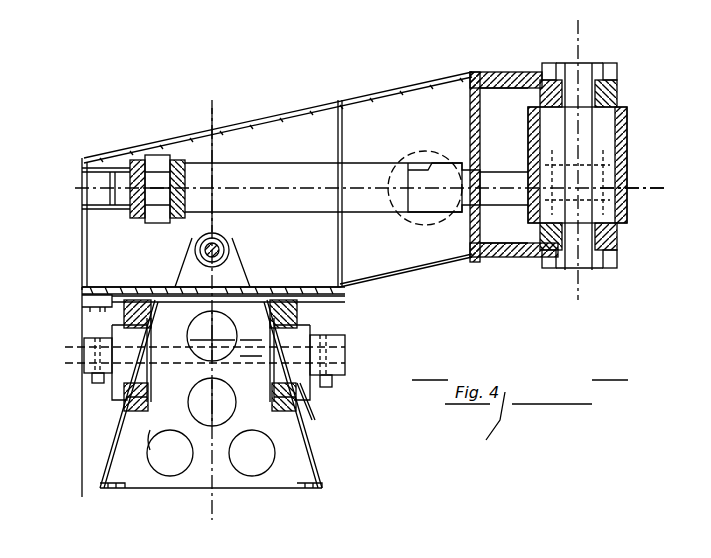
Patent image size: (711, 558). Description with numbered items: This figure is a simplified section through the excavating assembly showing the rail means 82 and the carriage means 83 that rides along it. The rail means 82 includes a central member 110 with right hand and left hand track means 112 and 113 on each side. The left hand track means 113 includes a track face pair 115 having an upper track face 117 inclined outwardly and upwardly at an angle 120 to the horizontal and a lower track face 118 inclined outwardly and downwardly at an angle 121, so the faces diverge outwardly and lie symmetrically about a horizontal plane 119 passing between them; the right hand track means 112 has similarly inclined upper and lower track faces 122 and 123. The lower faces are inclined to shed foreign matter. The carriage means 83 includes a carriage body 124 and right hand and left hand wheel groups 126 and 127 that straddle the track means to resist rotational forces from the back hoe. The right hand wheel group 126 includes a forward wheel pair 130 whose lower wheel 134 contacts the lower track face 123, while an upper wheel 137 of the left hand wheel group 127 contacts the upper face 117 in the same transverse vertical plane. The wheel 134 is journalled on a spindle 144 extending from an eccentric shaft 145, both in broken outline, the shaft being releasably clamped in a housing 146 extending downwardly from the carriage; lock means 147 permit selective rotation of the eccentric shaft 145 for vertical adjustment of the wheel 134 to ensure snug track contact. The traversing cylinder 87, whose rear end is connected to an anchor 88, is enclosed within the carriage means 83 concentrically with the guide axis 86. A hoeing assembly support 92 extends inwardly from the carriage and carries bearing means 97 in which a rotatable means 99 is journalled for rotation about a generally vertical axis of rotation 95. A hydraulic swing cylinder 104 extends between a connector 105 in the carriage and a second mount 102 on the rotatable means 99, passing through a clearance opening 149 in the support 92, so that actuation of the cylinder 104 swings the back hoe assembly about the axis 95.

The rail means 82 is at (356, 415).
The carriage means 83 is at (192, 124).
The guide axis 86 is at (194, 243).
The traversing cylinder 87 is at (230, 243).
The anchor 88 is at (238, 268).
The hoeing assembly support 92 is at (366, 92).
The vertical axis of rotation 95 is at (580, 28).
The bearing means 97 is at (483, 72).
The rotatable means 99 is at (628, 140).
The second mount 102 is at (630, 175).
The hydraulic swing cylinder 104 is at (250, 176).
The connector 105 is at (136, 216).
The central member 110 is at (314, 438).
The right hand track means 112 is at (170, 380).
The left hand track means 113 is at (252, 440).
The track face pair 115 is at (258, 334).
The upper track face 117 is at (290, 326).
The lower track face 118 is at (302, 404).
The horizontal plane 119 is at (342, 360).
The angle 120 is at (200, 322).
The angle 121 is at (218, 376).
The upper track face 122 is at (124, 324).
The lower track face 123 is at (150, 432).
The carriage body 124 is at (82, 284).
The right hand wheel group 126 is at (98, 388).
The left hand wheel group 127 is at (347, 333).
The forward wheel pair 130 is at (60, 366).
The lower wheel 134 is at (126, 408).
The upper wheel 137 is at (298, 386).
The spindle 144 is at (150, 347).
The eccentric shaft 145 is at (80, 344).
The housing 146 is at (82, 366).
The lock means 147 is at (96, 384).
The clearance opening 149 is at (410, 230).